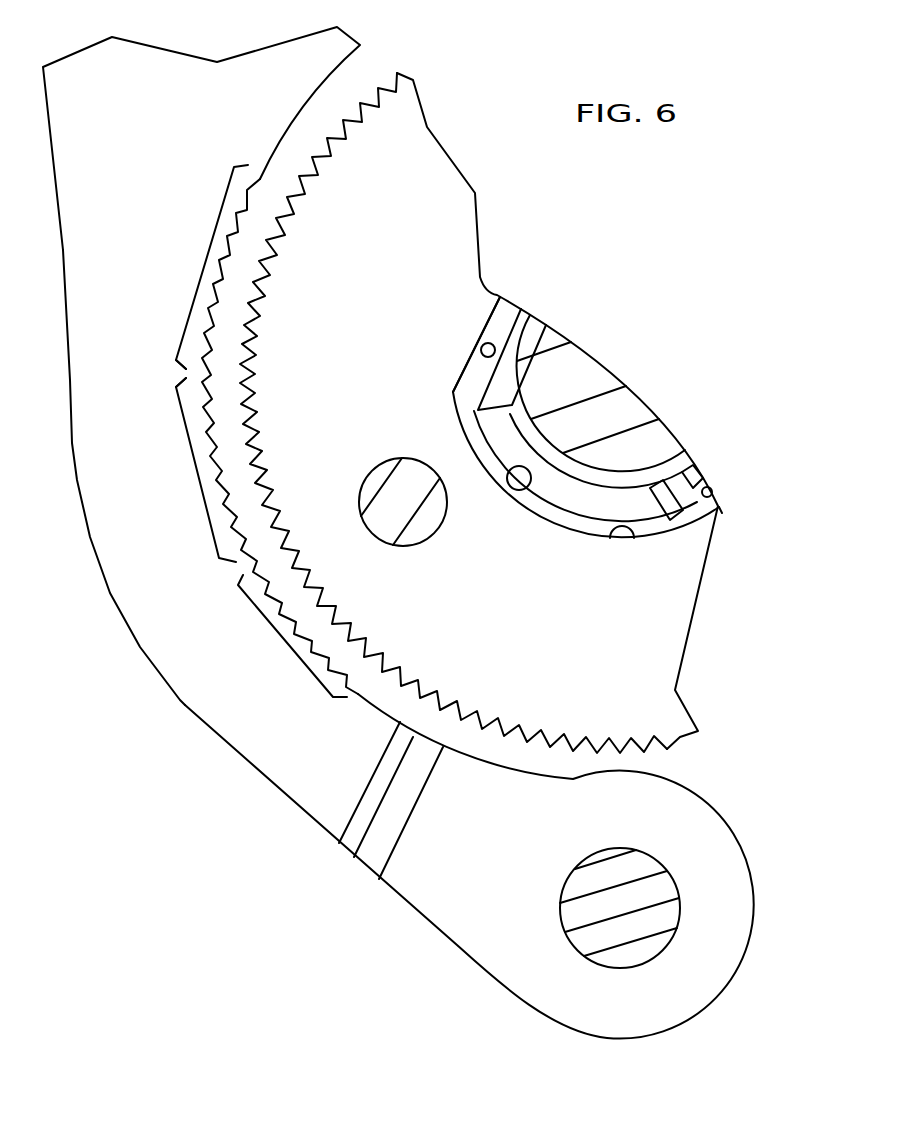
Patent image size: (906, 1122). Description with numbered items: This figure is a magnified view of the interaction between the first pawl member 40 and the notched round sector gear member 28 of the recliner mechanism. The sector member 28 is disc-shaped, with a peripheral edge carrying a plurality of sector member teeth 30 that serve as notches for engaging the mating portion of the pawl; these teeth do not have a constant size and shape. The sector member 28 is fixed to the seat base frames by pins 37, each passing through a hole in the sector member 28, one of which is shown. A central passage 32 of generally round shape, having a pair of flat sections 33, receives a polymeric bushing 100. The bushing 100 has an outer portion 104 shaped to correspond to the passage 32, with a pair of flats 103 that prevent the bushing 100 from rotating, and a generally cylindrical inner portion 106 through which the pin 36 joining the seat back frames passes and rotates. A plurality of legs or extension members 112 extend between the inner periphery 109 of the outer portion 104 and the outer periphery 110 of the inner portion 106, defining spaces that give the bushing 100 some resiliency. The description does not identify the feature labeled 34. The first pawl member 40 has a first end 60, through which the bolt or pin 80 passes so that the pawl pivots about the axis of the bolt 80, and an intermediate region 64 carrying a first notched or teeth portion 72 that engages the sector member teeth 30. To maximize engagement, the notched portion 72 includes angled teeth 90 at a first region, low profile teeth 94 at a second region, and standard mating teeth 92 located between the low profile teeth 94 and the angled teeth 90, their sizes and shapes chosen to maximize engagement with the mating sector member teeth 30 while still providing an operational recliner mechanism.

The sector gear member 28 is at (676, 625).
The sector member teeth 30 is at (283, 447).
The passage 32 is at (626, 550).
The flat sections 33 is at (482, 346).
The inner arcuate surface 34 is at (541, 336).
The pin 36 is at (640, 400).
The pin 37 is at (432, 535).
The first pawl member 40 is at (50, 257).
The first end 60 is at (455, 948).
The intermediate portion 64 is at (63, 440).
The first notched or teeth portion 72 is at (166, 373).
The bolt or pin 80 is at (656, 950).
The angled teeth portion 90 is at (206, 253).
The standard mating teeth portion 92 is at (198, 477).
The low profile teeth portion 94 is at (285, 641).
The bushing 100 is at (452, 430).
The flats 103 is at (480, 318).
The outer portion 104 is at (547, 522).
The inner portion 106 is at (543, 430).
The inner periphery 109 is at (517, 491).
The outer periphery 110 is at (683, 530).
The legs or extension members 112 is at (470, 397).